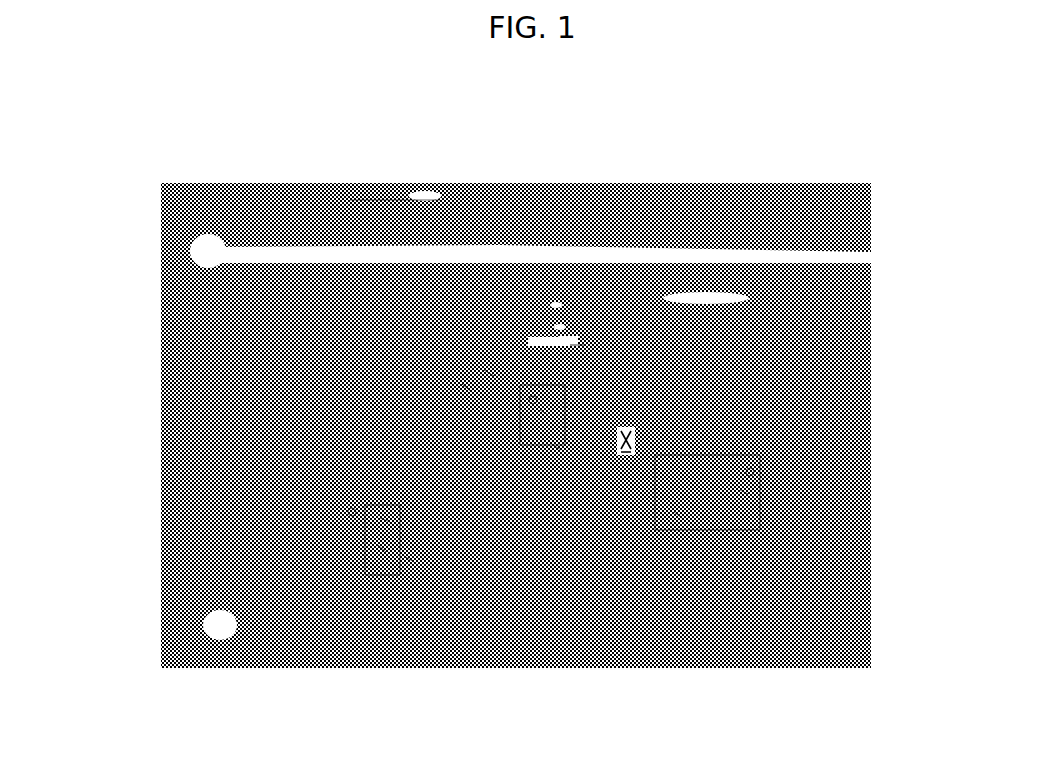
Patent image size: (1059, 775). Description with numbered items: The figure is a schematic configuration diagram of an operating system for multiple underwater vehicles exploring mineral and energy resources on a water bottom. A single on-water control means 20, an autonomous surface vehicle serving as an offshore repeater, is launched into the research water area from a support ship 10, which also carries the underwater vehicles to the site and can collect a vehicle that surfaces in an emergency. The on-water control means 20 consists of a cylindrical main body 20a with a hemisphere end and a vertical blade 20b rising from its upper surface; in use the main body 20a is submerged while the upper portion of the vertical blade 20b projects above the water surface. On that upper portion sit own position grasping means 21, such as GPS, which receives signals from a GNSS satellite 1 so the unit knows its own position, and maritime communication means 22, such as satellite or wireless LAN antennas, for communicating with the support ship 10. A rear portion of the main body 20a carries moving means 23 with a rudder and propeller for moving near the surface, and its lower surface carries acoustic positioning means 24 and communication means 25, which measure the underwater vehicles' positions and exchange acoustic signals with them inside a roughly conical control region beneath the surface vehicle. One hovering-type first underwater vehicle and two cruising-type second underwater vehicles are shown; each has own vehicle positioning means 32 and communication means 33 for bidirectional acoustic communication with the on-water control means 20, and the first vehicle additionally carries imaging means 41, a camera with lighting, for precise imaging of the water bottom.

The GNSS satellite 1 is at (372, 195).
The support ship 10 is at (733, 295).
The on-water control means 20 is at (692, 150).
The main body 20a is at (572, 343).
The vertical blade 20b is at (546, 340).
The own position grasping means 21 is at (557, 303).
The maritime communication means 22 is at (560, 326).
The moving means 23 is at (577, 346).
The acoustic positioning means 24 is at (488, 372).
The communication means 25 is at (466, 388).
The own vehicle positioning means 32 is at (543, 412).
The communication means 33 is at (380, 535).
The imaging means 41 is at (408, 560).